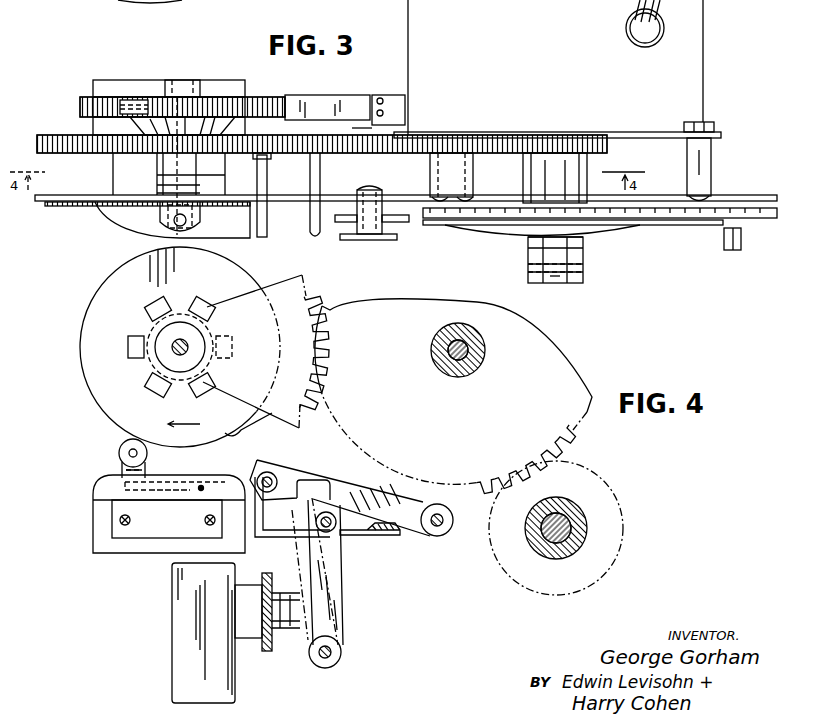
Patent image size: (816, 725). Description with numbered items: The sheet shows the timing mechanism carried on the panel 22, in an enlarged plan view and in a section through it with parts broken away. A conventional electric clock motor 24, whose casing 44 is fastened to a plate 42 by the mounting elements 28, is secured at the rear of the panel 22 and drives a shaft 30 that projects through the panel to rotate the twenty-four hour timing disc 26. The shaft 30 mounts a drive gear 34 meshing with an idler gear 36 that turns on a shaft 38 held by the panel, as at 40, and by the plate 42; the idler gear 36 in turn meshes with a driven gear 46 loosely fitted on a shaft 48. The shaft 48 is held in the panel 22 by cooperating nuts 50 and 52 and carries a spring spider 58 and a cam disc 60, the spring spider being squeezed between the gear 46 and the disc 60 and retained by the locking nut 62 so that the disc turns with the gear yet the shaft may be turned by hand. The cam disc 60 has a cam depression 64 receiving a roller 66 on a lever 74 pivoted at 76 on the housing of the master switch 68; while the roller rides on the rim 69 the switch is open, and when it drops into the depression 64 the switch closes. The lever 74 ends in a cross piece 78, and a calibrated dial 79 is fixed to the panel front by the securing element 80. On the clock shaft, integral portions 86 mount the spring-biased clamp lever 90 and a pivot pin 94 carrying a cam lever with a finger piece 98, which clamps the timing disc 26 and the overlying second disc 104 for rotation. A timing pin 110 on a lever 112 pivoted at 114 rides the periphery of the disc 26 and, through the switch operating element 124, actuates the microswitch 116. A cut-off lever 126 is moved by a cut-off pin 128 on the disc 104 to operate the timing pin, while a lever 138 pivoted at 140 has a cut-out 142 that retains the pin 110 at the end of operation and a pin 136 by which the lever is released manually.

In FIG. 3, the panel 22 is at (757, 188).
In FIG. 3, the electric clock motor 24 is at (710, 46).
In FIG. 3, the timing disc 26 is at (752, 228).
In FIG. 3, the mounting elements 28 is at (711, 162).
In FIG. 4, the shaft 30 is at (553, 542).
In FIG. 3, the drive gear 34 is at (600, 148).
In FIG. 4, the drive gear 34 is at (562, 458).
In FIG. 3, the idler gear 36 is at (433, 142).
In FIG. 4, the idler gear 36 is at (584, 424).
In FIG. 4, the shaft 38 is at (455, 358).
In FIG. 3, the shaft mounting 40 is at (485, 208).
In FIG. 3, the plate 42 is at (672, 136).
In FIG. 3, the casing 44 is at (690, 87).
In FIG. 3, the driven gear 46 is at (60, 138).
In FIG. 4, the driven gear 46 is at (306, 306).
In FIG. 3, the shaft 48 is at (178, 164).
In FIG. 4, the shaft 48 is at (175, 350).
In FIG. 3, the nut 50 is at (160, 189).
In FIG. 3, the nut 52 is at (160, 210).
In FIG. 3, the spring spider 58 is at (236, 125).
In FIG. 4, the spring spider 58 is at (136, 340).
In FIG. 3, the cam disc 60 is at (82, 102).
In FIG. 4, the cam disc 60 is at (95, 294).
In FIG. 3, the locking nut 62 is at (188, 86).
In FIG. 4, the cam depression 64 is at (246, 431).
In FIG. 4, the roller 66 is at (119, 452).
In FIG. 3, the master switch 68 is at (141, 73).
In FIG. 4, the master switch 68 is at (88, 540).
In FIG. 4, the rim 69 is at (81, 380).
In FIG. 3, the lever 74 is at (332, 100).
In FIG. 4, the lever 74 is at (255, 478).
In FIG. 4, the pivot 76 is at (199, 491).
In FIG. 3, the cross piece 78 is at (355, 130).
In FIG. 4, the cross piece 78 is at (368, 535).
In FIG. 3, the calibrated dial 79 is at (68, 205).
In FIG. 3, the securing element 80 is at (195, 218).
In FIG. 3, the integral portions 86 is at (528, 255).
In FIG. 3, the clamp lever 90 is at (528, 243).
In FIG. 3, the pivot pin 94 is at (570, 283).
In FIG. 3, the finger piece 98 is at (553, 278).
In FIG. 3, the second disc 104 is at (620, 233).
In FIG. 3, the timing pin 110 is at (310, 226).
In FIG. 4, the timing pin 110 is at (318, 528).
In FIG. 4, the lever 112 is at (349, 592).
In FIG. 4, the pivot 114 is at (342, 652).
In FIG. 4, the microswitch 116 is at (172, 640).
In FIG. 4, the switch operating element 124 is at (296, 630).
In FIG. 3, the cut-off lever 126 is at (381, 246).
In FIG. 3, the cut-off pin 128 is at (380, 207).
In FIG. 3, the pin 136 is at (268, 213).
In FIG. 4, the pin 136 is at (276, 478).
In FIG. 4, the lever 138 is at (336, 476).
In FIG. 3, the pivot 140 is at (430, 180).
In FIG. 4, the pivot 140 is at (437, 536).
In FIG. 4, the cut-out 142 is at (296, 561).